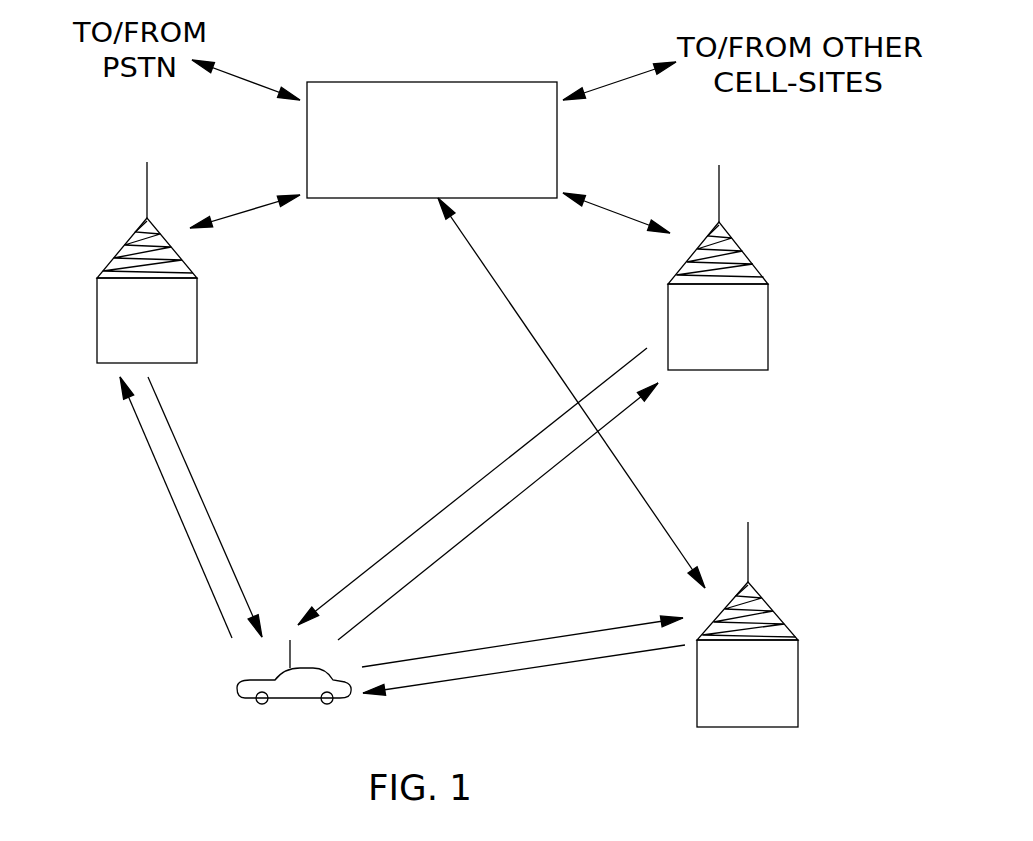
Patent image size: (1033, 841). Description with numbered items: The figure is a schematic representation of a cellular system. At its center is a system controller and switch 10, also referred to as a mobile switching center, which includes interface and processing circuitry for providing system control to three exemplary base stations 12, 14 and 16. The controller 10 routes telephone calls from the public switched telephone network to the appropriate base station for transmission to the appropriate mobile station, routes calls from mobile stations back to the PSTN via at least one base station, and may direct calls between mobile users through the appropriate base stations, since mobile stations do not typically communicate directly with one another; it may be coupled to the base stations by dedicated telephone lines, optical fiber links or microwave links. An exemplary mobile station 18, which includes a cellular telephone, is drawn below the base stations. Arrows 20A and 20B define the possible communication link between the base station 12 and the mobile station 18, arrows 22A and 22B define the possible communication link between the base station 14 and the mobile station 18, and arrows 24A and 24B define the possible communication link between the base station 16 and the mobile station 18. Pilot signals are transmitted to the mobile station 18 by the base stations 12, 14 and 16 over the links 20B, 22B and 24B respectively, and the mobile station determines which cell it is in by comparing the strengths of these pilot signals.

The system controller and switch 10 is at (498, 82).
The base station 12 is at (130, 247).
The base station 14 is at (740, 250).
The base station 16 is at (770, 607).
The mobile station 18 is at (305, 700).
The arrow 20A is at (173, 505).
The arrow 20B is at (214, 522).
The arrow 22A is at (440, 512).
The arrow 22B is at (477, 529).
The arrow 24A is at (457, 651).
The arrow 24B is at (471, 680).